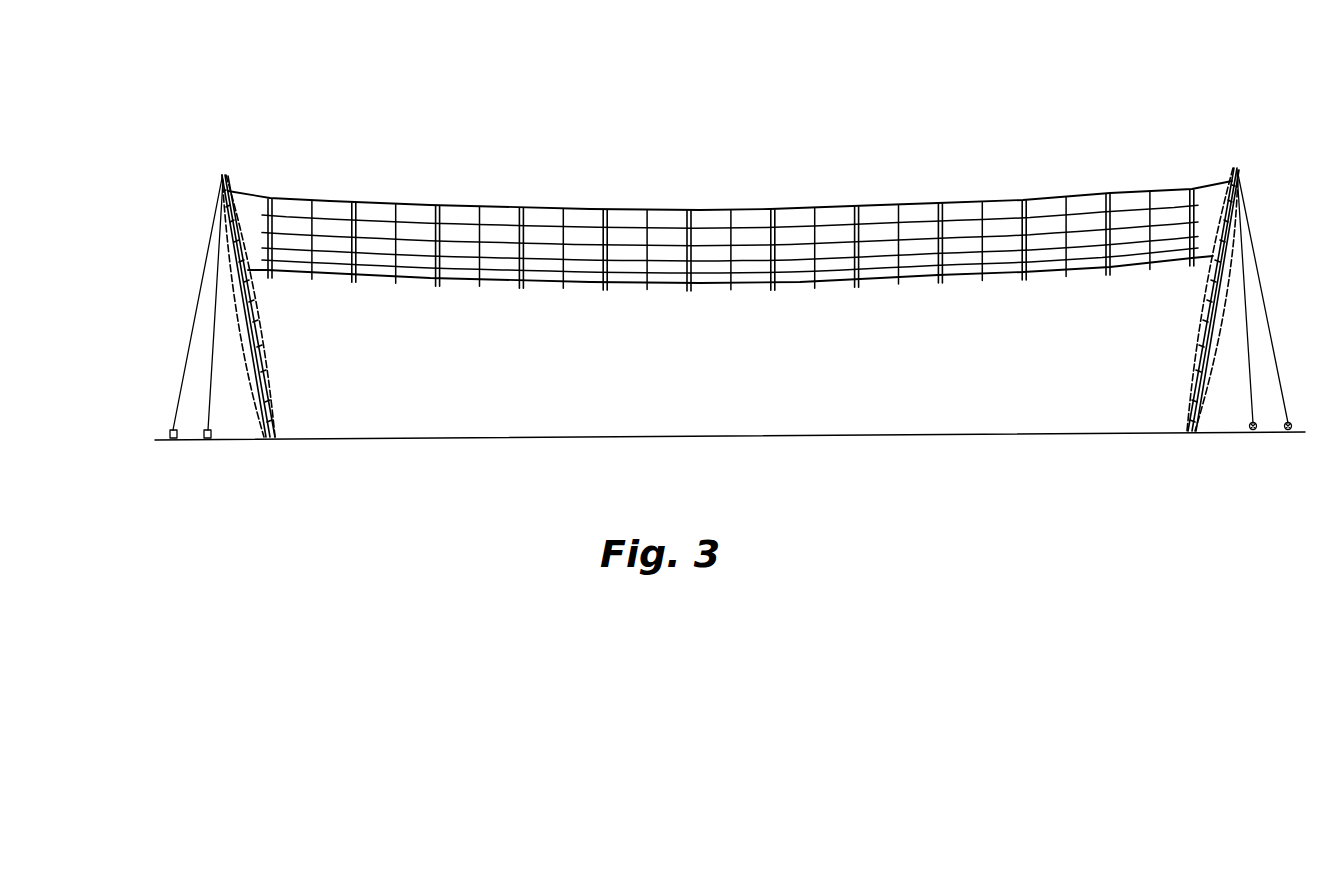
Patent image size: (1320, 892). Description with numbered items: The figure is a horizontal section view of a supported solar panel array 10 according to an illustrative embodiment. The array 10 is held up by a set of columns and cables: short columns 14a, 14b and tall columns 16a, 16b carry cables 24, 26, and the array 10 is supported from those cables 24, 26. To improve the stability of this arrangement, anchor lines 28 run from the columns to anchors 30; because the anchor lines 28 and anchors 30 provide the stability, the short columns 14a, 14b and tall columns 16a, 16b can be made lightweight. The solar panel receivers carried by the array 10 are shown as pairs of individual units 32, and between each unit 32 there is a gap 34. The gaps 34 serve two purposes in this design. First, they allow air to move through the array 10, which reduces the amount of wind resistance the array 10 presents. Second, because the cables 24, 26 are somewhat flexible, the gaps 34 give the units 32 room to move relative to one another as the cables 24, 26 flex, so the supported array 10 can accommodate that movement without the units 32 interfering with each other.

The array 10 is at (900, 113).
The short column 14a is at (266, 368).
The short column 14b is at (1192, 386).
The tall column 16a is at (230, 247).
The tall column 16b is at (1227, 230).
The cable 24 is at (1210, 259).
The cable 26 is at (1203, 181).
The anchor lines 28 is at (220, 345).
The anchors 30 is at (207, 440).
The individual units 32 is at (853, 297).
The gaps 34 is at (604, 222).